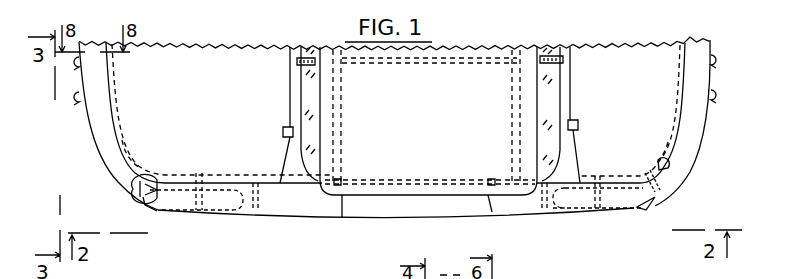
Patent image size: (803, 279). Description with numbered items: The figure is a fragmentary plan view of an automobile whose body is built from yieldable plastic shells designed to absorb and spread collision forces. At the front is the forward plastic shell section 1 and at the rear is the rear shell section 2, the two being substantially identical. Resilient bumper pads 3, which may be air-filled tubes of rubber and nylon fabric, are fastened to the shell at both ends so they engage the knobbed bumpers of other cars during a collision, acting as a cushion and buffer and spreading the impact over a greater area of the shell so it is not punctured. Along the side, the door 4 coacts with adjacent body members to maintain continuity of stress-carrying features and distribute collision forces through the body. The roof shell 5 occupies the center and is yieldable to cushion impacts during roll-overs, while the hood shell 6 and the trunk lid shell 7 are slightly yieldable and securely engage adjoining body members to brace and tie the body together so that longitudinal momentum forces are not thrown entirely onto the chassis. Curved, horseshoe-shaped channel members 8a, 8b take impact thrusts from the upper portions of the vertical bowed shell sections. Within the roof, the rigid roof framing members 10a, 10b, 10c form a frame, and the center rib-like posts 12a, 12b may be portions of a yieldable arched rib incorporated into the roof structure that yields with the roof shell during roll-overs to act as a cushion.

The forward plastic shell section 1 is at (108, 170).
The rear shell section 2 is at (692, 140).
The resilient bumper pads 3 is at (395, 90).
The door 4 is at (448, 216).
The roof shell 5 is at (447, 104).
The hood shell 6 is at (210, 127).
The trunk lid shell 7 is at (645, 98).
The channel member 8a is at (121, 129).
The channel member 8b is at (666, 146).
The rigid roof framing member 10a is at (343, 136).
The rigid roof framing member 10b is at (514, 125).
The rigid roof framing member 10c is at (408, 176).
The center rib-like post 12a is at (307, 65).
The center rib-like post 12b is at (560, 64).